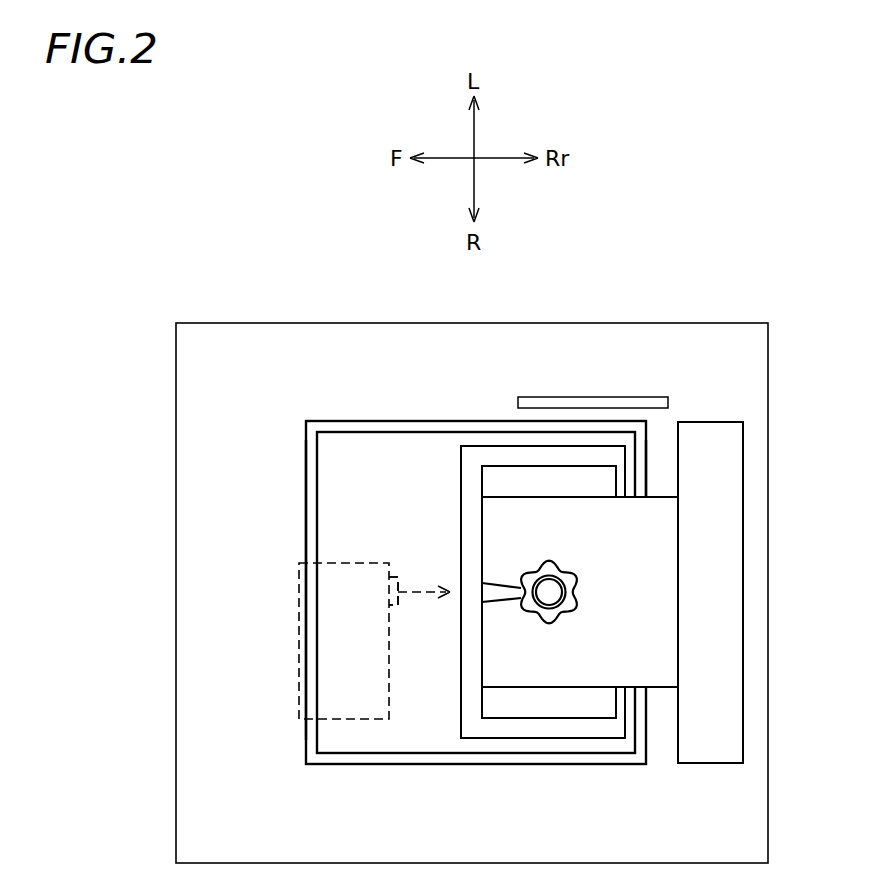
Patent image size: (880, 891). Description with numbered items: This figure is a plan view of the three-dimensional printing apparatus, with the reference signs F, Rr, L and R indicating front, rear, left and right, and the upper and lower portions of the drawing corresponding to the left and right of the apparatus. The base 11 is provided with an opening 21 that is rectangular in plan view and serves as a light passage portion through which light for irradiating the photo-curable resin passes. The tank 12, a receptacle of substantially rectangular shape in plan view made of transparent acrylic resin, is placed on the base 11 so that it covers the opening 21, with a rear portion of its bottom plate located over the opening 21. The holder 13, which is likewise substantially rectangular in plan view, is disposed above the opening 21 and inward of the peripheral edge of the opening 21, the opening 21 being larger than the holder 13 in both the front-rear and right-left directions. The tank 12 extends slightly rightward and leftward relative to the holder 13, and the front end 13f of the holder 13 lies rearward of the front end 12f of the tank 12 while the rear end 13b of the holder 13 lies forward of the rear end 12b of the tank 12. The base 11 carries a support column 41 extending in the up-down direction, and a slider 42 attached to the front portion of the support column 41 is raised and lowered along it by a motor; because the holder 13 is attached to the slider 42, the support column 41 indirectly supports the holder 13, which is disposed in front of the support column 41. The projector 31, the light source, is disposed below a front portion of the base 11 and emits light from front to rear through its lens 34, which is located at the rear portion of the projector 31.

The base 11 is at (677, 323).
The tank 12 is at (340, 421).
The front end of the tank 12f is at (306, 488).
The rear end of the tank 12b is at (647, 438).
The holder 13 is at (539, 718).
The front end of the holder 13f is at (461, 705).
The rear end of the holder 13b is at (618, 713).
The opening 21 is at (470, 513).
The projector 31 is at (302, 609).
The lens 34 is at (400, 605).
The support column 41 is at (743, 488).
The slider 42 is at (553, 485).